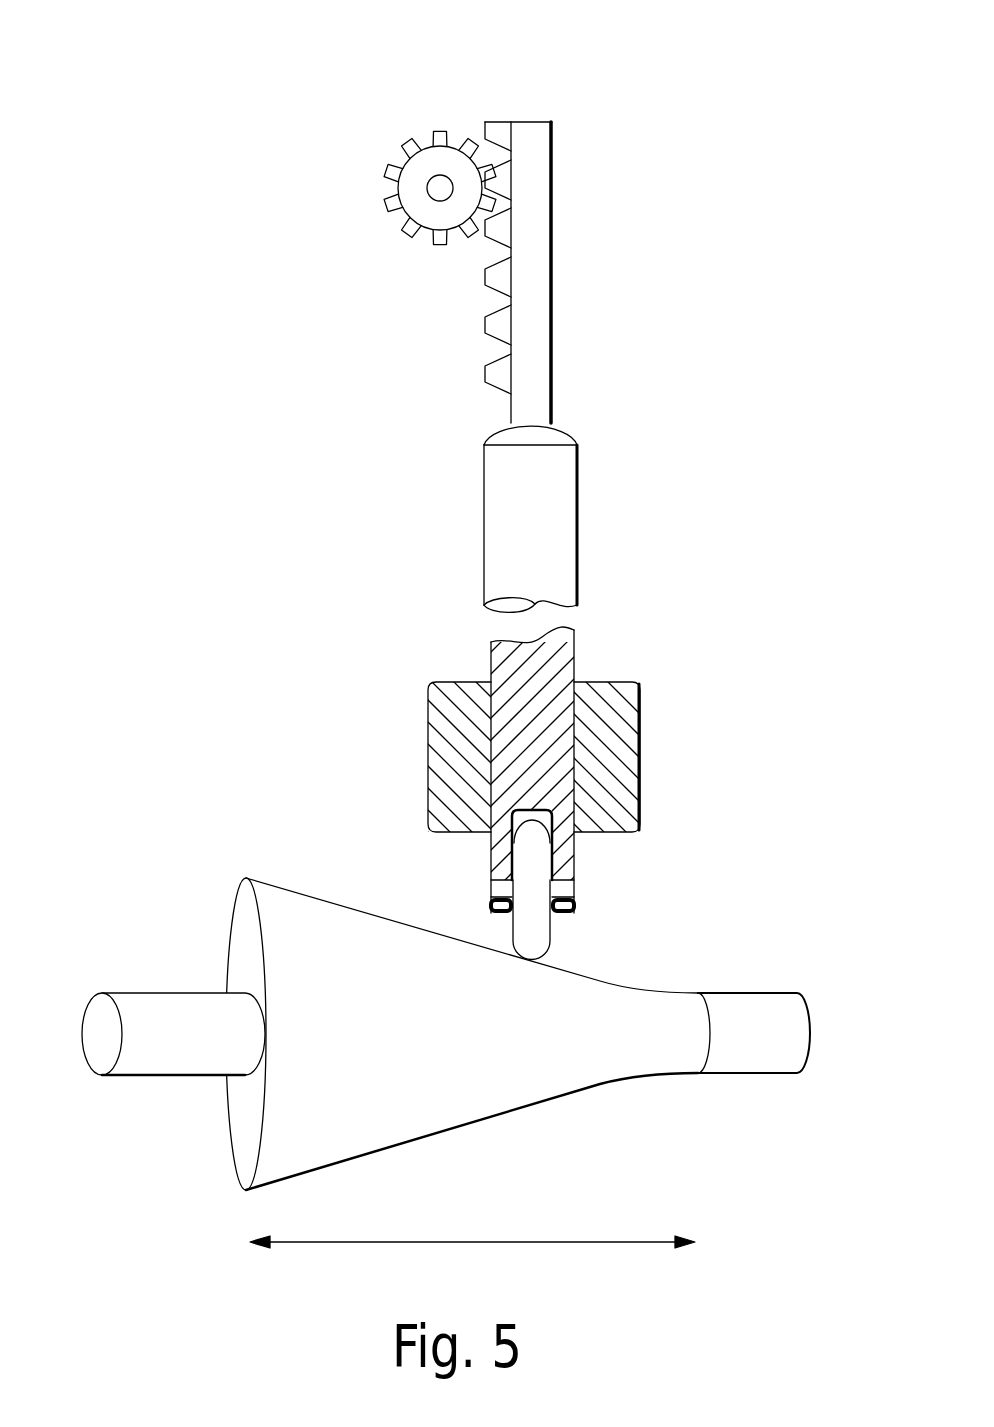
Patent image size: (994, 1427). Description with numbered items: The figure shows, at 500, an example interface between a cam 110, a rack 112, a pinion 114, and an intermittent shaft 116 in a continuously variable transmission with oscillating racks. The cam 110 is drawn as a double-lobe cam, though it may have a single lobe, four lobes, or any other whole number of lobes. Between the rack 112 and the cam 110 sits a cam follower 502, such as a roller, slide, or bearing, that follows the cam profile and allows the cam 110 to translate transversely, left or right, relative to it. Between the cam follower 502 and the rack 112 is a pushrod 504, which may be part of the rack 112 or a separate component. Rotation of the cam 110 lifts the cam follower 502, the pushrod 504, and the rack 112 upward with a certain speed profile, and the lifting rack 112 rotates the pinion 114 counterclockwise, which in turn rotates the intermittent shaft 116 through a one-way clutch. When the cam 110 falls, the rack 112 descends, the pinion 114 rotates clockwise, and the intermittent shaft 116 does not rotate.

The cam-rack-pinion interface 500 is at (795, 52).
The cam 110 is at (335, 943).
The rack 112 is at (533, 303).
The pinion 114 is at (410, 193).
The intermittent shaft 116 is at (440, 186).
The cam follower 502 is at (523, 860).
The pushrod 504 is at (513, 685).